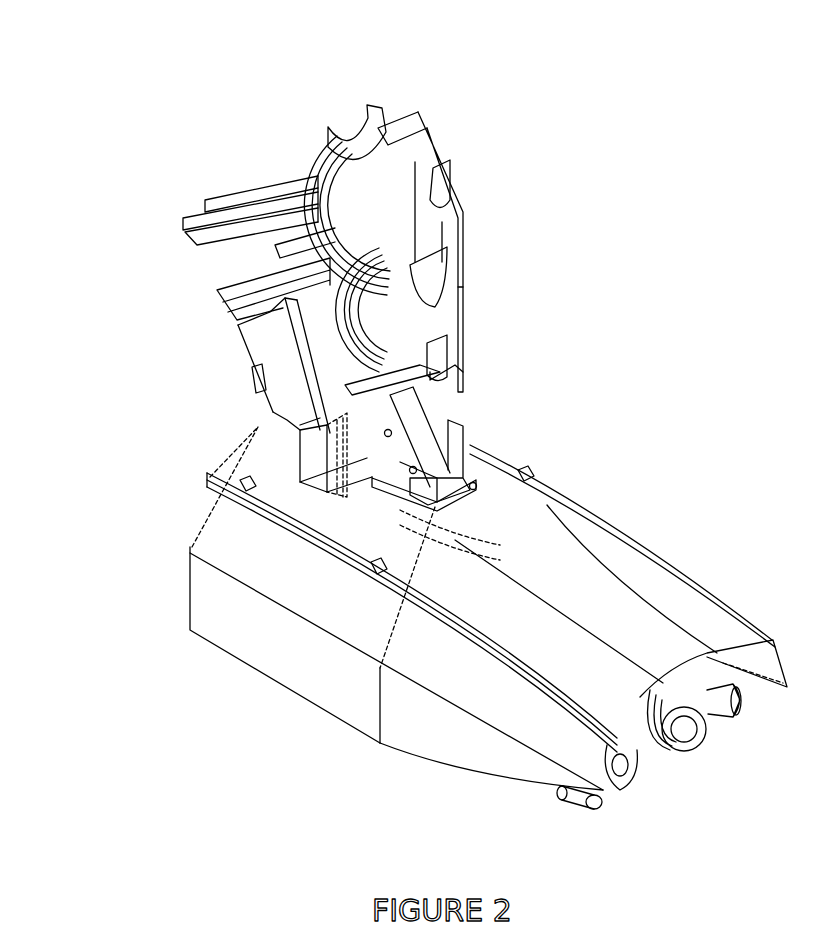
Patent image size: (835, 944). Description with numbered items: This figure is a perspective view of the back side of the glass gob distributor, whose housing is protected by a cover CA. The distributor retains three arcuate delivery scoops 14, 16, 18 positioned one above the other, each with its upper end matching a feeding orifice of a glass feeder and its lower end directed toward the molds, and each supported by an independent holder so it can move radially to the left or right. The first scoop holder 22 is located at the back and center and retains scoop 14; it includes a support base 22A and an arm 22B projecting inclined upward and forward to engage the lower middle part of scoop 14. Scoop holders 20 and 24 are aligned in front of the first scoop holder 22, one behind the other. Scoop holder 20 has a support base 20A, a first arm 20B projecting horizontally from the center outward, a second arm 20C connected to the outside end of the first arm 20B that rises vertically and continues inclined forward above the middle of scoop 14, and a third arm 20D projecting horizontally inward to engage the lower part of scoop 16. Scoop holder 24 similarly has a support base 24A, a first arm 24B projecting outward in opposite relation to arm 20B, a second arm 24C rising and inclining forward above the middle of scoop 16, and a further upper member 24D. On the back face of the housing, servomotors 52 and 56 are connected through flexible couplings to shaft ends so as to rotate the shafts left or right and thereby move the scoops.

The delivery scoop 14 is at (413, 287).
The delivery scoop 16 is at (380, 233).
The delivery scoop 18 is at (353, 133).
The scoop holder 20 is at (286, 425).
The support base 20A is at (383, 433).
The first arm 20B is at (363, 460).
The second arm 20C is at (280, 358).
The third arm 20D is at (277, 310).
The first scoop holder 22 is at (474, 442).
The support base 22A is at (450, 503).
The arm 22B is at (432, 408).
The scoop holder 24 is at (479, 266).
The support base 24A is at (343, 422).
The first arm 24B is at (445, 383).
The second arm 24C is at (463, 287).
The frame top arm 24D is at (400, 138).
The servomotor 52 is at (620, 763).
The servomotor 56 is at (683, 728).
The cover CA is at (260, 472).